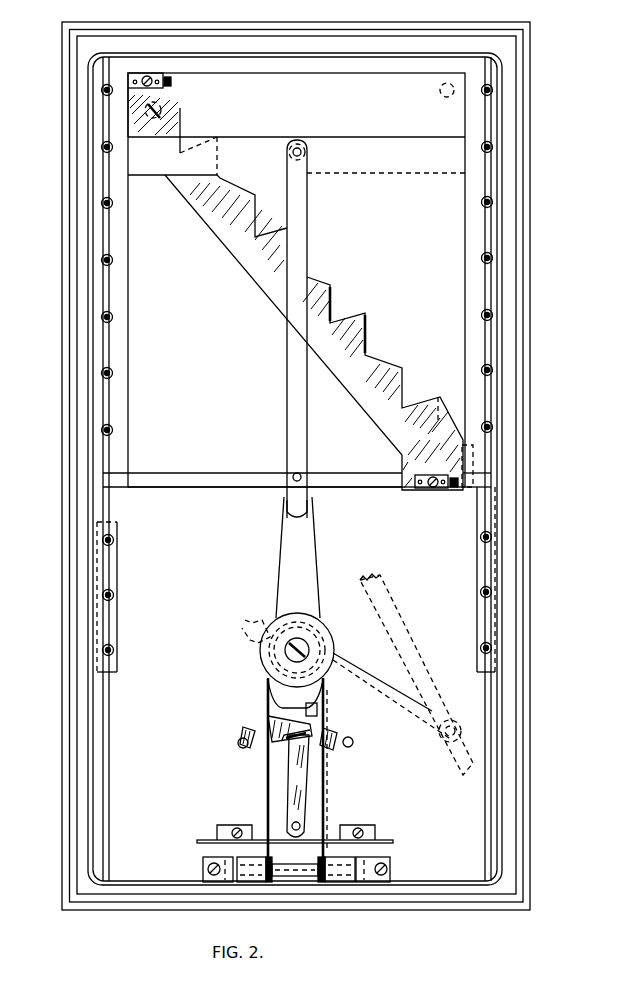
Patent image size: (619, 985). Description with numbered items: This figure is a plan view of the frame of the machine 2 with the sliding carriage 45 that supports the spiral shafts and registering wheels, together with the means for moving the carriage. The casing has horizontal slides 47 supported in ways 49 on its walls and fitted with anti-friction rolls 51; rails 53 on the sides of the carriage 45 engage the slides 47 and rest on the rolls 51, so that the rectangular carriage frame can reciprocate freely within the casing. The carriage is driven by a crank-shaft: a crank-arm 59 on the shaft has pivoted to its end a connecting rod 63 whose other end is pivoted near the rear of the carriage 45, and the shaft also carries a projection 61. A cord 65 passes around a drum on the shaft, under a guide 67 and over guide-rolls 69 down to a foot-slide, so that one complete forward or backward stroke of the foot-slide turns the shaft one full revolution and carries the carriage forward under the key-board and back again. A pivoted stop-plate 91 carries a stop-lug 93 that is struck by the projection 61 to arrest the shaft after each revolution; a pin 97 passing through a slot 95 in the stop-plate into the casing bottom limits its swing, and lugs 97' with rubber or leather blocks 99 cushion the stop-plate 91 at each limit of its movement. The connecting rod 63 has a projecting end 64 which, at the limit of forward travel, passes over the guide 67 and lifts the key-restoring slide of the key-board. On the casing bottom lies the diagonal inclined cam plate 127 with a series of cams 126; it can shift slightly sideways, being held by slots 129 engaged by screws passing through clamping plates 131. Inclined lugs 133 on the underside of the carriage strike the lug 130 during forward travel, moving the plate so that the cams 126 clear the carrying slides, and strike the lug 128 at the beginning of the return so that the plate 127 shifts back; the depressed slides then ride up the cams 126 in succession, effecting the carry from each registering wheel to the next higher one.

The switch housing 2 is at (72, 503).
The carriage 45 is at (128, 335).
The horizontal slides 47 is at (118, 572).
The ways 49 is at (96, 350).
The anti-friction rolls 51 is at (113, 375).
The rails 53 is at (120, 245).
The crank-arm 59 is at (306, 578).
The projection 61 is at (246, 622).
The connecting rod 63 is at (287, 420).
The projecting end 64 is at (300, 512).
The cord 65 is at (325, 777).
The guide 67 is at (335, 840).
The guide-rolls 69 is at (250, 878).
The stop-plate 91 is at (295, 775).
The stop-lug 93 is at (312, 713).
The slot 95 is at (300, 735).
The pin 97 is at (266, 724).
The lugs 97' is at (303, 747).
The rubber or leather blocks 99 is at (240, 738).
The cams 126 is at (366, 330).
The inclined cam plate 127 is at (272, 284).
The inclined lug 128 is at (445, 430).
The slots 129 is at (173, 82).
The inclined lug 130 is at (162, 112).
The clamping plates 131 is at (149, 77).
The inclined lugs 133 is at (145, 120).